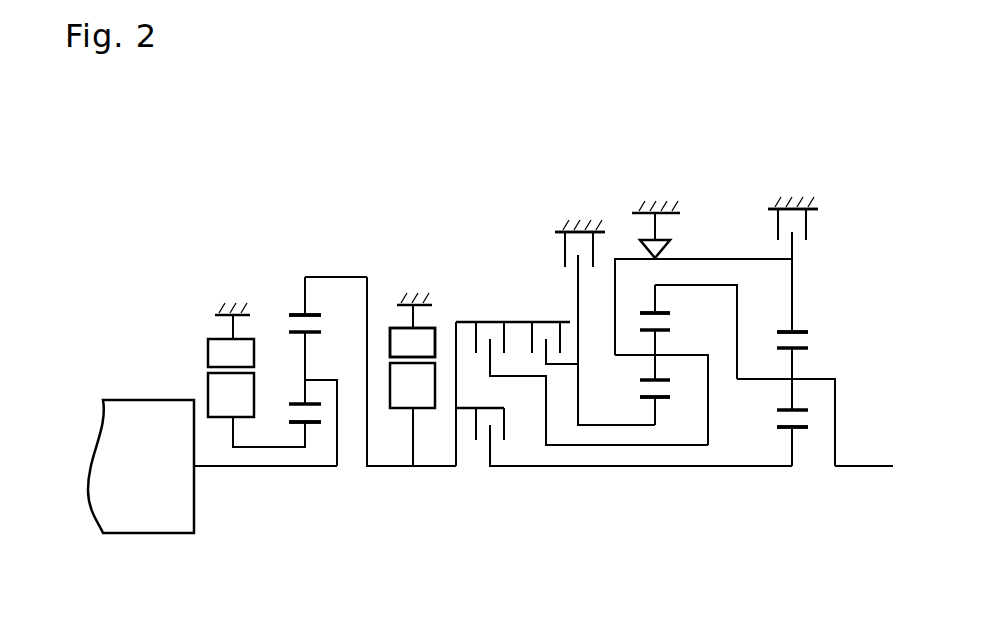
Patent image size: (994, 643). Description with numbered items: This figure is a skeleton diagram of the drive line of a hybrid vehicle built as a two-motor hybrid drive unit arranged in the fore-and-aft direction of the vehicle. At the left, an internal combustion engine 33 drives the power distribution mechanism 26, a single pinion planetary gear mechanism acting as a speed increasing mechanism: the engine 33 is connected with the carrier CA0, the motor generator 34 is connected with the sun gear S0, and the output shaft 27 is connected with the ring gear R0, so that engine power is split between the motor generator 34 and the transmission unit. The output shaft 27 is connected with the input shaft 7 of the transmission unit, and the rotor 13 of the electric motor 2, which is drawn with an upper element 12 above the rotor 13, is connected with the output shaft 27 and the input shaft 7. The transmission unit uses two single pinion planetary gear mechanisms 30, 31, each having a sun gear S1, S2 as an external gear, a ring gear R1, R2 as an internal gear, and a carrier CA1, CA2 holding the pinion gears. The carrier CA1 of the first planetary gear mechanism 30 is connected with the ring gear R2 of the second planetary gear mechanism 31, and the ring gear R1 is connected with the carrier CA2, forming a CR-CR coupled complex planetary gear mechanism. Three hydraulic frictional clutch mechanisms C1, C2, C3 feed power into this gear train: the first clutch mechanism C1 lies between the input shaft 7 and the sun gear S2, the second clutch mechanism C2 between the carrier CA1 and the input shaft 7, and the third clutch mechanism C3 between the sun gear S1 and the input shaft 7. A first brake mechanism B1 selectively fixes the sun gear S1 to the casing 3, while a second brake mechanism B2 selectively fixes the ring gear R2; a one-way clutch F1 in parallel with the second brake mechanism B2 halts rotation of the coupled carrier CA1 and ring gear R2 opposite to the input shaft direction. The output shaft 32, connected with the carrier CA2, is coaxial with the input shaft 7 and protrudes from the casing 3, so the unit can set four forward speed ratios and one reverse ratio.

The electric motor 2 is at (436, 337).
The casing 3 is at (233, 303).
The input shaft 7 is at (435, 470).
The second electric motor 12 is at (393, 330).
The rotor 13 is at (428, 410).
The power distribution mechanism 26 is at (293, 308).
The output shaft 27 is at (386, 470).
The first planetary gear mechanism 30 is at (628, 430).
The second planetary gear mechanism 31 is at (786, 447).
The output shaft 32 is at (875, 468).
The internal combustion engine 33 is at (137, 412).
The motor generator 34 is at (205, 373).
The ring gear R0 is at (311, 313).
The carrier CA0 is at (327, 380).
The sun gear S0 is at (296, 426).
The first clutch mechanism C1 is at (624, 425).
The second clutch mechanism C2 is at (582, 369).
The third clutch mechanism C3 is at (552, 328).
The first brake mechanism B1 is at (605, 309).
The second brake mechanism B2 is at (793, 206).
The one-way clutch F1 is at (671, 235).
The ring gear R1 is at (668, 313).
The carrier CA1 is at (625, 357).
The sun gear S1 is at (667, 400).
The ring gear R2 is at (797, 330).
The carrier CA2 is at (770, 378).
The sun gear S2 is at (797, 430).